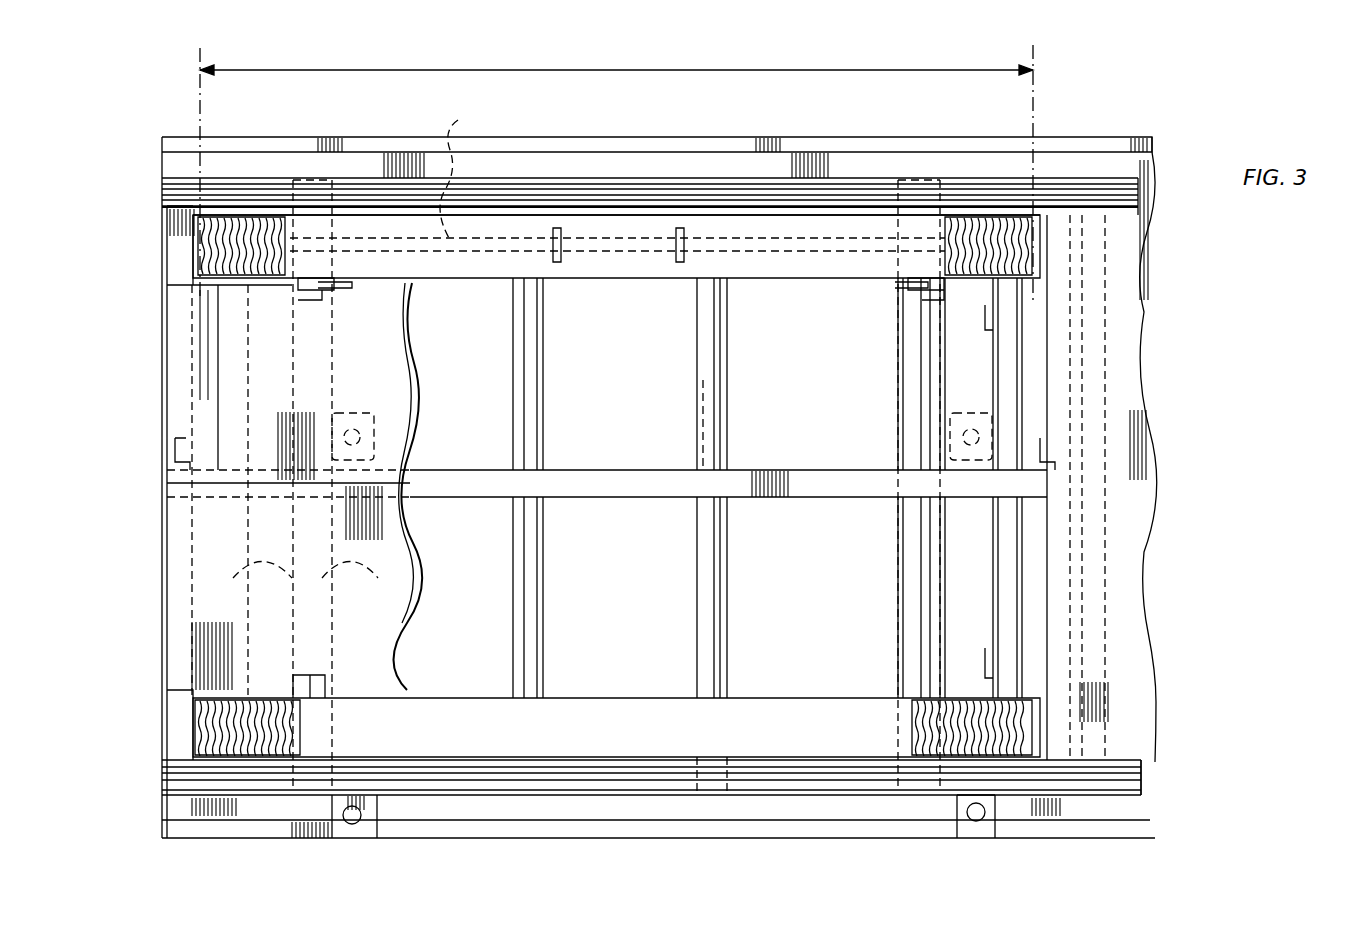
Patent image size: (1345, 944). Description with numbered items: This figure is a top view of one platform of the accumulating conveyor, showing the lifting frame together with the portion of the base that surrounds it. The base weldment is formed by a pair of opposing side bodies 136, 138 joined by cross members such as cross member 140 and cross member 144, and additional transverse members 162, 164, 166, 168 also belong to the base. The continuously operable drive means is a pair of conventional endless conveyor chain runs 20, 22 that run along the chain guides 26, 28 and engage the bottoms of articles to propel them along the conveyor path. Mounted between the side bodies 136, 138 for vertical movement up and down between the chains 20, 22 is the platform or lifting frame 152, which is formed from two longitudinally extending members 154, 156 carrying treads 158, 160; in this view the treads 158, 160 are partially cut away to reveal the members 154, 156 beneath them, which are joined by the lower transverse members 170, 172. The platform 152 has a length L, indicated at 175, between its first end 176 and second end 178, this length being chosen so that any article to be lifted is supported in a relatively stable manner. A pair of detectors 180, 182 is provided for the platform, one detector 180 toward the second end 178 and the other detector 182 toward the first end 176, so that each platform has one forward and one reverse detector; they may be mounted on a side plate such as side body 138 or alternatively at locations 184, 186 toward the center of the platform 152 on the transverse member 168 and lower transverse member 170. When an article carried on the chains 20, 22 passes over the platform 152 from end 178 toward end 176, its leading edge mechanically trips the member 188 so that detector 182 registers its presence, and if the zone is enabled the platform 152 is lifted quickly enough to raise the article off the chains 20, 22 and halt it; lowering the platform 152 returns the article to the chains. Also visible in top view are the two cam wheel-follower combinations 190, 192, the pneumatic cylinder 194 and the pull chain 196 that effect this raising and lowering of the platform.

The conveyor chain run 20 is at (662, 190).
The conveyor chain run 22 is at (675, 775).
The chain guide 26 is at (1148, 190).
The chain guide 28 is at (1145, 775).
The side body 136 is at (872, 152).
The side body 138 is at (862, 820).
The cross member 140 is at (1098, 512).
The cross member 144 is at (178, 602).
The platform 152 is at (806, 283).
The longitudinally extending member 154 is at (645, 275).
The longitudinally extending member 156 is at (655, 705).
The tread 158 is at (243, 234).
The tread 160 is at (278, 740).
The transverse member 162 is at (900, 580).
The transverse member 164 is at (695, 577).
The transverse member 166 is at (510, 577).
The transverse member 168 is at (357, 583).
The lower transverse member 170 is at (1005, 580).
The lower transverse member 172 is at (262, 583).
The length L indication 175 is at (746, 67).
The first end 176 is at (1040, 243).
The second end 178 is at (195, 237).
The detector 180 is at (366, 825).
The detector 182 is at (975, 824).
The alternative detector mounting location 184 is at (361, 413).
The alternative detector mounting location 186 is at (965, 413).
The tripping member 188 is at (968, 815).
The cam wheel-follower combination 190 is at (323, 305).
The cam wheel-follower combination 192 is at (905, 305).
The pneumatic cylinder 194 is at (595, 260).
The pull chain 196 is at (431, 169).